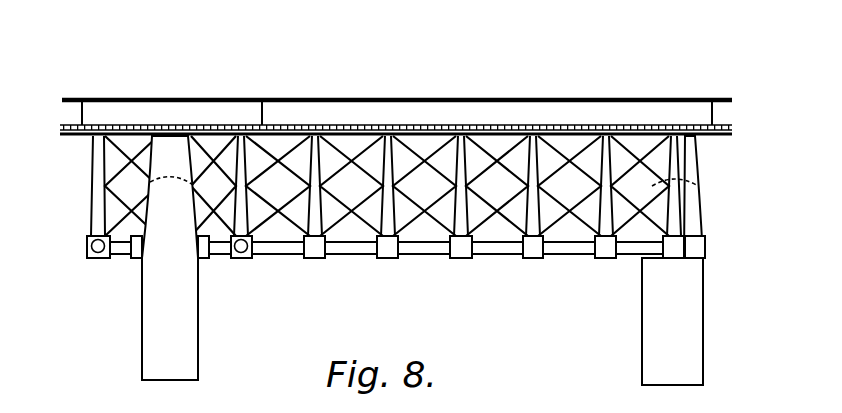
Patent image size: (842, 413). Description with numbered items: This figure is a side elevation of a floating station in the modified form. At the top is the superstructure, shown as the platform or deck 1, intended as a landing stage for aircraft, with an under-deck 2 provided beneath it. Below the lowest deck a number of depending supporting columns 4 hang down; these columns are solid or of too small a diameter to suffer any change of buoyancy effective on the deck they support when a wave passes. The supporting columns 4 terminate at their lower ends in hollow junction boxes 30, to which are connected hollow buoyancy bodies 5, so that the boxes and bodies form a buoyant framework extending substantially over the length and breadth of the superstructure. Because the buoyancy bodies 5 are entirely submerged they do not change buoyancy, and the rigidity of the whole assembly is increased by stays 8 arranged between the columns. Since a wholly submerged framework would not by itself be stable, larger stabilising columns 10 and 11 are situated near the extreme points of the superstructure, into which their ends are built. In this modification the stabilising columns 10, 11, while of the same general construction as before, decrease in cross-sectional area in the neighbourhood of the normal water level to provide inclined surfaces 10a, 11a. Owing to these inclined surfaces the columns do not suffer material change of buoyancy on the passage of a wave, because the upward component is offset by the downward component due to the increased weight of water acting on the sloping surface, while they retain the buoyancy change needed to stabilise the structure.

The platform or deck 1 is at (402, 104).
The under-deck 2 is at (712, 138).
The supporting columns 4 is at (242, 205).
The buoyancy bodies 5 is at (432, 250).
The stays 8 is at (498, 165).
The stabilising column 10 is at (158, 327).
The inclined surface 10a is at (152, 157).
The stabilising column 11 is at (657, 313).
The inclined surface 11a is at (653, 160).
The hollow junction boxes 30 is at (535, 247).